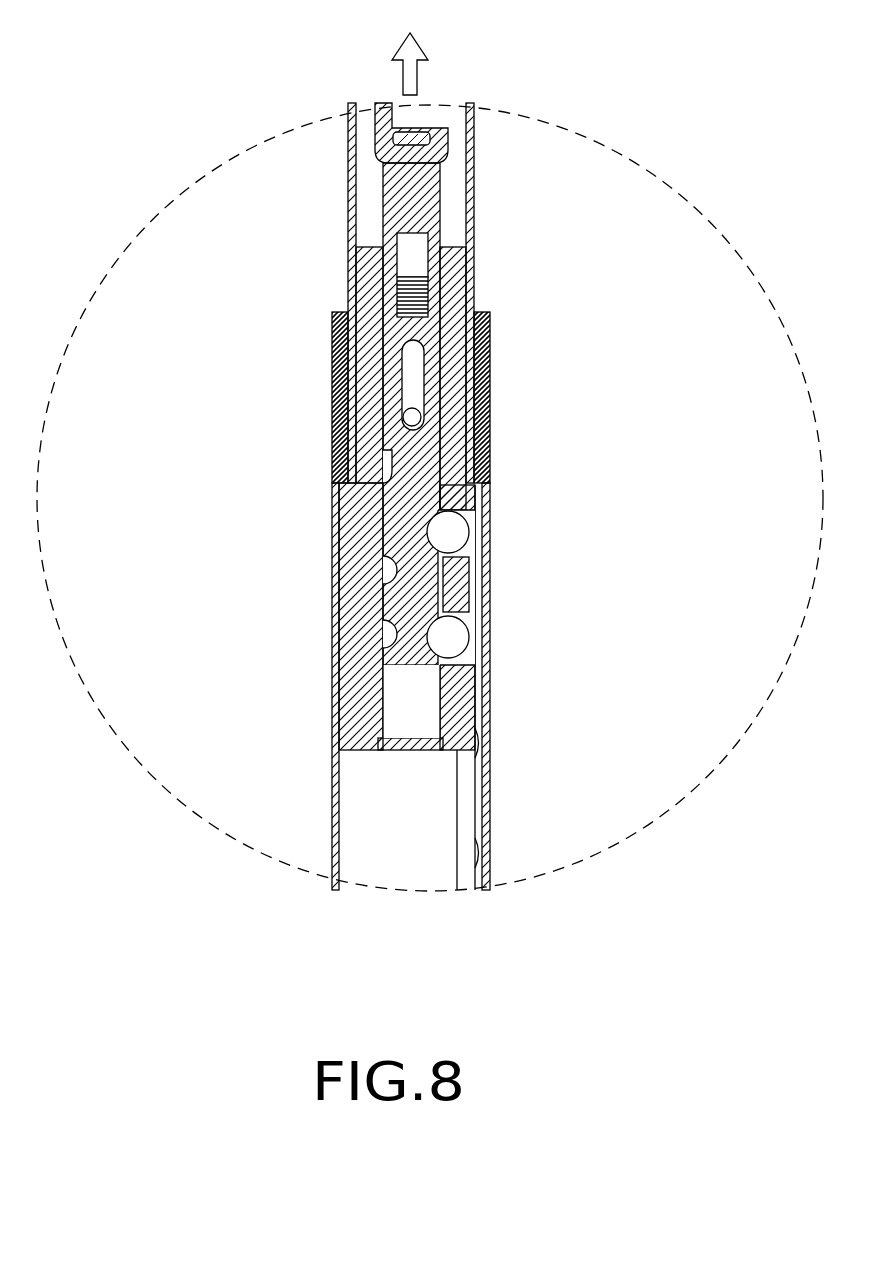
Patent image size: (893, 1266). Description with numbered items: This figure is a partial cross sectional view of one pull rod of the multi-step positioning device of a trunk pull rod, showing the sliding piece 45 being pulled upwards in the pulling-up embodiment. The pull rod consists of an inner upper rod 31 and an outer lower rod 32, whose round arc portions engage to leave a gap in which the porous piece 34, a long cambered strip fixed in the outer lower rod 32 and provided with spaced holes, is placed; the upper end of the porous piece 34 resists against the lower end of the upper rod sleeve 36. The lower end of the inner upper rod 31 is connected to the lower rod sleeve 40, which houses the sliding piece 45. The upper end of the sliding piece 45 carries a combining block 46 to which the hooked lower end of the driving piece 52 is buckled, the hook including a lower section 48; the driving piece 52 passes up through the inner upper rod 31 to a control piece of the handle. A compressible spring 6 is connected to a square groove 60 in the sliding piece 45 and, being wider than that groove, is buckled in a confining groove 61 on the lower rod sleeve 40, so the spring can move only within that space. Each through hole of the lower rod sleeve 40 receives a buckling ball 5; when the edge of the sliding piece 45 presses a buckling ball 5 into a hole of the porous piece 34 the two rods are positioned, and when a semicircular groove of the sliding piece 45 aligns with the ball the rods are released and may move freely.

The buckling ball 5 is at (465, 523).
The compressible spring 6 is at (397, 312).
The inner upper rod 31 is at (351, 210).
The outer lower rod 32 is at (336, 780).
The porous piece 34 is at (478, 778).
The upper rod sleeve 36 is at (340, 405).
The lower rod sleeve 40 is at (455, 285).
The sliding piece 45 is at (405, 458).
The combining block 46 is at (423, 205).
The lower section 48 is at (430, 545).
The driving piece 52 is at (379, 134).
The square groove 60 is at (424, 303).
The confining groove 61 is at (402, 276).